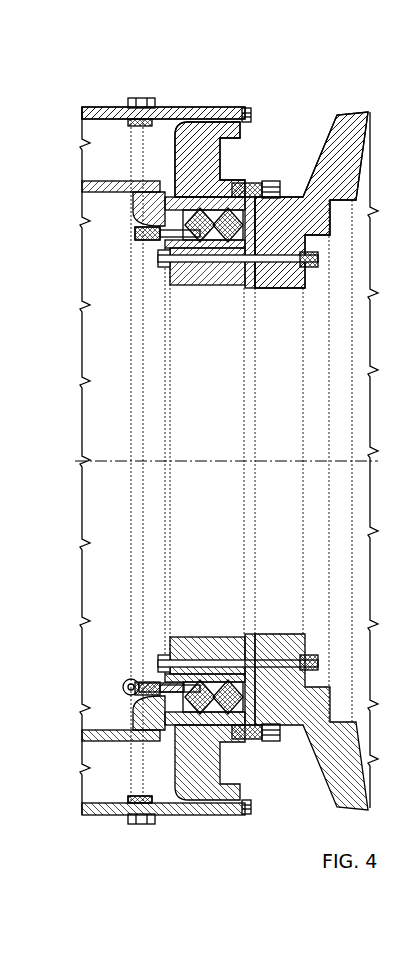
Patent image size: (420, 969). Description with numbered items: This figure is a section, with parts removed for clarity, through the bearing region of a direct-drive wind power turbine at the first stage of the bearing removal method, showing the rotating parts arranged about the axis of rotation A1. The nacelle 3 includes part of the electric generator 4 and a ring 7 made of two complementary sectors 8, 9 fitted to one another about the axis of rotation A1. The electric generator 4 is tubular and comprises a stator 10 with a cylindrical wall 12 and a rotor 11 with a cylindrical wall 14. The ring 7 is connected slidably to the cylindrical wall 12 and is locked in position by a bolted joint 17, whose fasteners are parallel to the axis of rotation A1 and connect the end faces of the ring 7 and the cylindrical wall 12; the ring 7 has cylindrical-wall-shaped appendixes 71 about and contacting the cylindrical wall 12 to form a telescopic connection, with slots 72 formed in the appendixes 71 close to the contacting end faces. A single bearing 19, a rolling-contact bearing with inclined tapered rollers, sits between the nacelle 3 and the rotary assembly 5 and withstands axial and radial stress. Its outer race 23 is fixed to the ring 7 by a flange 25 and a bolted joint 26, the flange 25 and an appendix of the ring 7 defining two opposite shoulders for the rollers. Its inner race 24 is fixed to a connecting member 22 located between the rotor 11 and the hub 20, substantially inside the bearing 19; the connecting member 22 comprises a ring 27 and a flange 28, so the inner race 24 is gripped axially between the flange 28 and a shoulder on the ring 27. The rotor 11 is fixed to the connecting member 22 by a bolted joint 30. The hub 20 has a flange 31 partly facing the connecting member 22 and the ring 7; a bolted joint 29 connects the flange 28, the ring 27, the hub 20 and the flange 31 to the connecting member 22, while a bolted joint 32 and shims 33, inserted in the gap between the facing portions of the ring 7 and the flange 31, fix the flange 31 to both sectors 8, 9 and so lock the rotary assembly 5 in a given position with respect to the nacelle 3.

The nacelle 3 is at (128, 96).
The electric generator 4 is at (92, 824).
The rotary assembly 5 is at (383, 170).
The ring 7 is at (228, 96).
The sector 8 is at (200, 770).
The sector 9 is at (205, 148).
The stator 10 is at (78, 121).
The rotor 11 is at (78, 186).
The cylindrical wall 12 is at (112, 116).
The cylindrical wall 14 is at (128, 196).
The bolted joint 17 is at (160, 100).
The bearing 19 is at (252, 688).
The hub 20 is at (337, 740).
The connecting member 22 is at (209, 290).
The outer race 23 is at (215, 734).
The inner race 24 is at (192, 660).
The flange 25 is at (160, 736).
The bolted joint 26 is at (168, 732).
The ring 27 is at (210, 646).
The flange 28 is at (250, 288).
The bolted joint 29 is at (320, 262).
The bolted joint 30 is at (128, 238).
The flange 31 is at (283, 237).
The bolted joint 32 is at (300, 197).
The shims 33 is at (252, 182).
The appendixes 71 is at (134, 822).
The slots 72 is at (150, 824).
The axis of rotation A1 is at (345, 462).